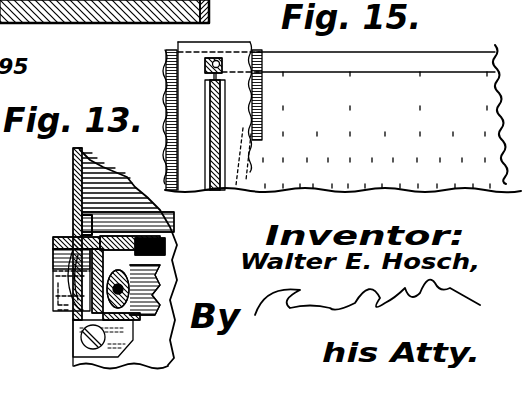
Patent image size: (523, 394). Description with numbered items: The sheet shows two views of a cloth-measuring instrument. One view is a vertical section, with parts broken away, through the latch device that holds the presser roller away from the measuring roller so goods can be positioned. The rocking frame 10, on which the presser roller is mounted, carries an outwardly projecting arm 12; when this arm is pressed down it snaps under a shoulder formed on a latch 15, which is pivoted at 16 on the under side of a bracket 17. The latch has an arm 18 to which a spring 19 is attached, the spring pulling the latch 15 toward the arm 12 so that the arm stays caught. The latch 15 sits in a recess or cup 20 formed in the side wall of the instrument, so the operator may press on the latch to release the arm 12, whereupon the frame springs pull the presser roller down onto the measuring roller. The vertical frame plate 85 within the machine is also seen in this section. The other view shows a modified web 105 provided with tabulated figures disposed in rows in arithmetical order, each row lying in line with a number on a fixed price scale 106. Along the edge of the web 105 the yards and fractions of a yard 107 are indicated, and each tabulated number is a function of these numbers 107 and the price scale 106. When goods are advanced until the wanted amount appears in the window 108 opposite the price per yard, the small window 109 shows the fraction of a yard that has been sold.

In FIG. 13, the rocking frame 10 is at (150, 285).
In FIG. 13, the outwardly projecting arm 12 is at (65, 300).
In FIG. 13, the latch 15 is at (58, 275).
In FIG. 13, the pivot 16 is at (148, 236).
In FIG. 13, the bracket 17 is at (82, 222).
In FIG. 13, the arm 18 is at (160, 246).
In FIG. 13, the spring 19 is at (128, 215).
In FIG. 13, the recess or cup 20 is at (53, 262).
In FIG. 13, the vertical frame plate 85 is at (100, 180).
In FIG. 15, the web 105 is at (452, 62).
In FIG. 15, the fixed price scale 106 is at (185, 145).
In FIG. 15, the yards and fractions of a yard 107 is at (345, 62).
In FIG. 15, the window 108 is at (222, 175).
In FIG. 15, the small window 109 is at (207, 63).